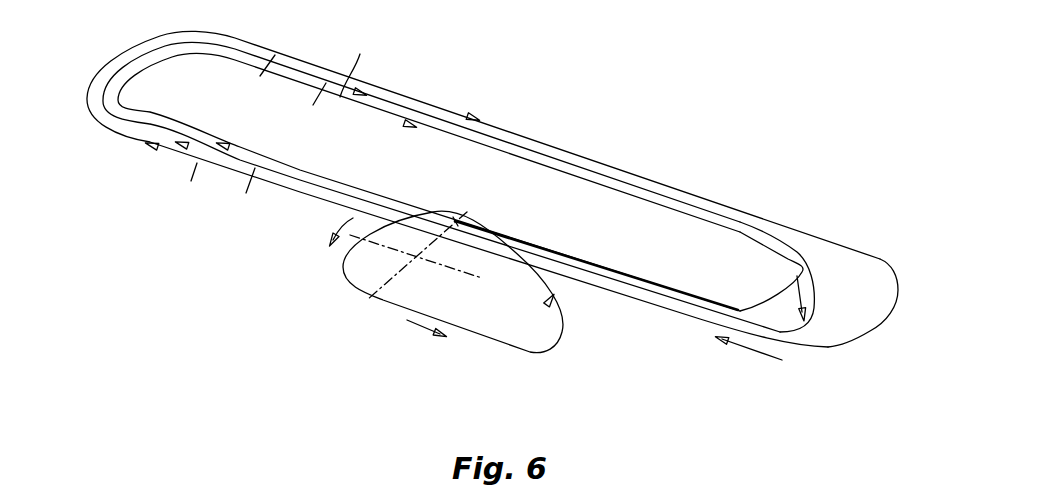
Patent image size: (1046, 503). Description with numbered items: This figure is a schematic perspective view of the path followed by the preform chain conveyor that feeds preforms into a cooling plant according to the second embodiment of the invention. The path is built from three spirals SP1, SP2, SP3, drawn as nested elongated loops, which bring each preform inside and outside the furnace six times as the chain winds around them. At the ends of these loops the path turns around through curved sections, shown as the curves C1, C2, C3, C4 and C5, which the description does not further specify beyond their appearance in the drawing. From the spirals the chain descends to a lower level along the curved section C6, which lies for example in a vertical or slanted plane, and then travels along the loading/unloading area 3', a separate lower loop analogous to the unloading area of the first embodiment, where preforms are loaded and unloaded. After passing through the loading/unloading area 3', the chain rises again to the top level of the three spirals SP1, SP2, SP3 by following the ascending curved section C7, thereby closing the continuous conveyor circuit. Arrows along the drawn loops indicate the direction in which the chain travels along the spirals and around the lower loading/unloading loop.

The outer conveyor loop C1 is at (98, 68).
The outer conveyor loop end curve C2 is at (877, 331).
The middle conveyor loop C3 is at (126, 51).
The inner conveyor return curve C4 is at (773, 295).
The inner conveyor loop C5 is at (147, 57).
The curved section C6 is at (817, 293).
The ascending curved section C7 is at (563, 343).
The spiral SP1 is at (234, 126).
The spiral SP2 is at (286, 151).
The spiral SP3 is at (351, 65).
The loading/unloading area 3' is at (392, 256).